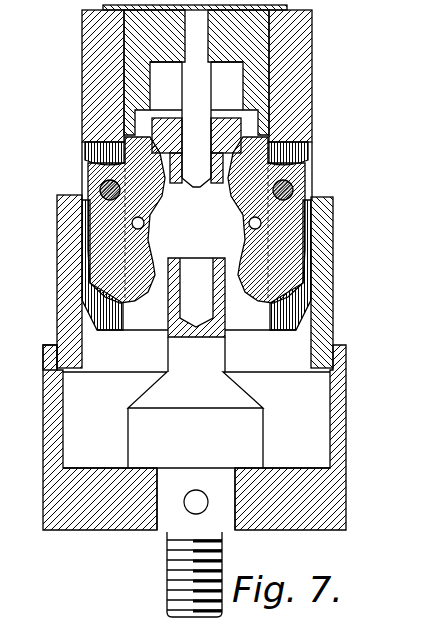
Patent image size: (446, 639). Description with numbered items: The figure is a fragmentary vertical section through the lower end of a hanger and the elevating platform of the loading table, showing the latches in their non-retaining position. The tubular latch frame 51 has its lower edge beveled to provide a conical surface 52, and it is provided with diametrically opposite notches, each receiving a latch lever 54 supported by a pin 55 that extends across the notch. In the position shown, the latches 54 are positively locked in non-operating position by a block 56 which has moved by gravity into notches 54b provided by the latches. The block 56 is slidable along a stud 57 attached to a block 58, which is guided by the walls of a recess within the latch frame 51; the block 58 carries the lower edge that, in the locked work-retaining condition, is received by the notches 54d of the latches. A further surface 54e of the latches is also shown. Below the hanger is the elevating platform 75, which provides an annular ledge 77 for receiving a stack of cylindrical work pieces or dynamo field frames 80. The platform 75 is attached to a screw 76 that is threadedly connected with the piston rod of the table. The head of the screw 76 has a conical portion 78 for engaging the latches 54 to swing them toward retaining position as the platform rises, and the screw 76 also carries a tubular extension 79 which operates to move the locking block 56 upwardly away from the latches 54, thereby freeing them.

The latch frame 51 is at (308, 72).
The block 58 is at (137, 23).
The latch lever 54 is at (97, 237).
The notches 54b is at (183, 118).
The notches 54d is at (108, 160).
The jaw upper end 54e is at (145, 133).
The pin 55 is at (100, 190).
The block 56 is at (178, 140).
The stud 57 is at (194, 190).
The conical surface 52 is at (284, 322).
The tubular extension 79 is at (180, 258).
The work pieces 80 is at (60, 307).
The conical portion 78 is at (152, 378).
The screw 76 is at (265, 434).
The annular ledge 77 is at (43, 384).
The elevating platform 75 is at (43, 418).